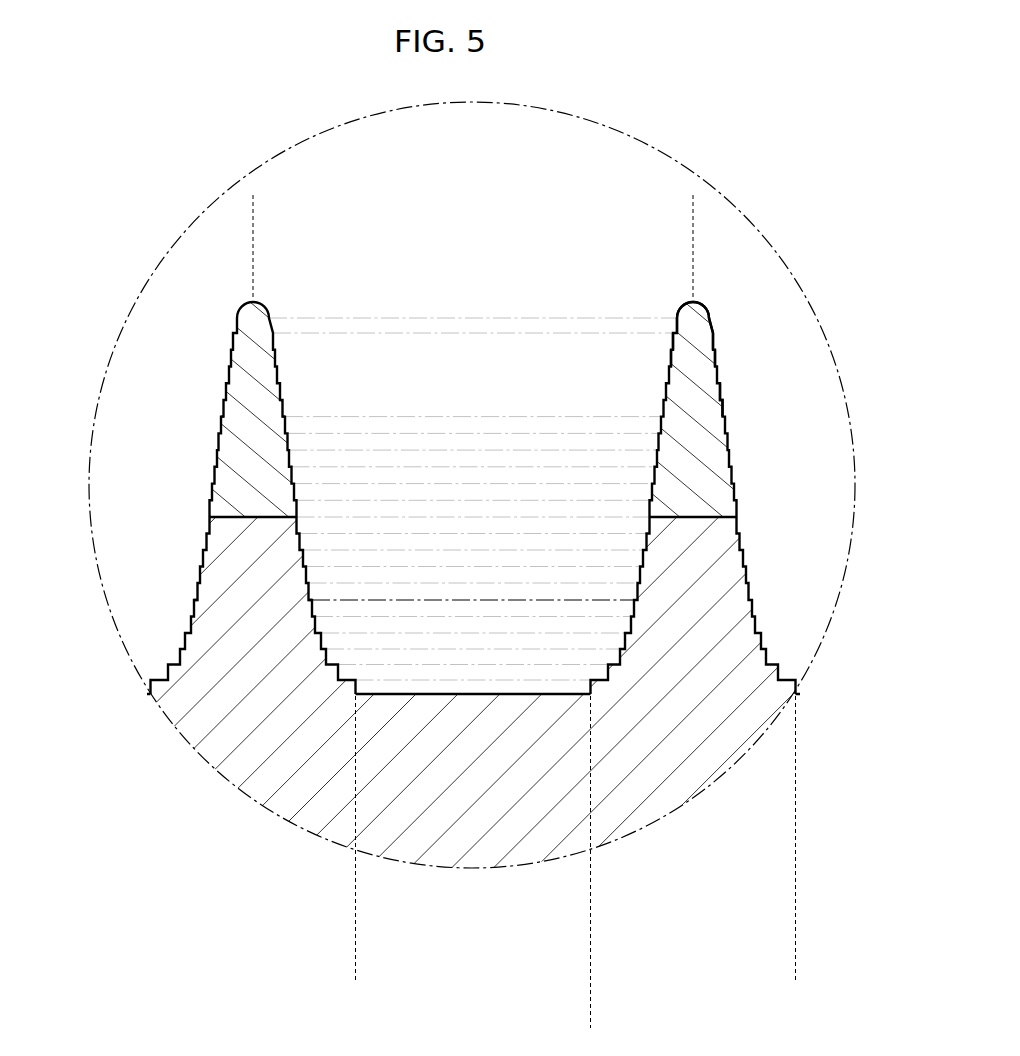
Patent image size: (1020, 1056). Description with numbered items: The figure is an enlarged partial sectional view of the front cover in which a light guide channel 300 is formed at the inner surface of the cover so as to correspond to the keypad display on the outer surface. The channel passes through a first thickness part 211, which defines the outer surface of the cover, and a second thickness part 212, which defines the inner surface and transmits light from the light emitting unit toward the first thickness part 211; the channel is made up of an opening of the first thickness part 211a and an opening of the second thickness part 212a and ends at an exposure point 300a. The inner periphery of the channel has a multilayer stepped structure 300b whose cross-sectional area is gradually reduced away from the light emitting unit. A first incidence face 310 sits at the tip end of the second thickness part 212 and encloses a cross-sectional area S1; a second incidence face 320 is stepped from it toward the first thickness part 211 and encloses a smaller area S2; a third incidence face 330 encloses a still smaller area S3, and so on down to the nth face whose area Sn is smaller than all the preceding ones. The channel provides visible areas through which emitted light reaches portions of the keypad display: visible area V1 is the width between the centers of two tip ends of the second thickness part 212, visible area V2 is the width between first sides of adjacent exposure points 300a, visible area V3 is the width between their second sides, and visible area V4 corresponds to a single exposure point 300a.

The light guide channel 300 is at (604, 702).
The exposure point 300a is at (473, 696).
The multilayer stepped structure 300b is at (730, 343).
The first thickness part 211 is at (749, 588).
The second thickness part 212 is at (724, 440).
The opening of the first thickness part 211a is at (350, 601).
The opening of the second thickness part 212a is at (350, 420).
The first incidence face 310 is at (676, 317).
The second incidence face 320 is at (670, 343).
The third incidence face 330 is at (670, 362).
The cross-sectional area of the first incidence face S1 is at (440, 325).
The cross-sectional area of the second incidence face S2 is at (385, 342).
The cross-sectional area of the third incidence face S3 is at (340, 357).
The cross-sectional area of the nth incidence face Sn is at (394, 690).
The first visible area V1 is at (693, 203).
The second visible area V2 is at (356, 974).
The third visible area V3 is at (590, 1018).
The fourth visible area V4 is at (590, 928).